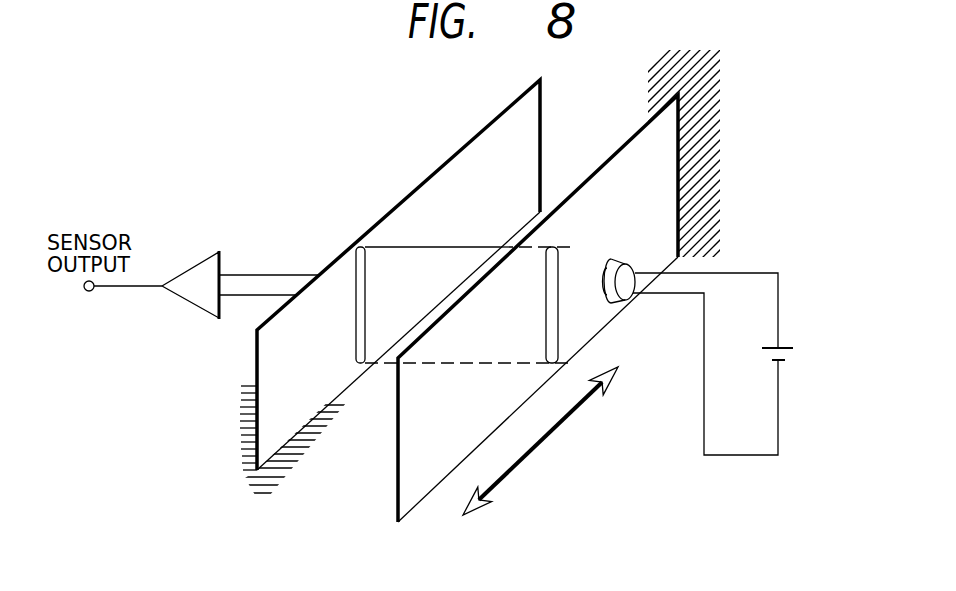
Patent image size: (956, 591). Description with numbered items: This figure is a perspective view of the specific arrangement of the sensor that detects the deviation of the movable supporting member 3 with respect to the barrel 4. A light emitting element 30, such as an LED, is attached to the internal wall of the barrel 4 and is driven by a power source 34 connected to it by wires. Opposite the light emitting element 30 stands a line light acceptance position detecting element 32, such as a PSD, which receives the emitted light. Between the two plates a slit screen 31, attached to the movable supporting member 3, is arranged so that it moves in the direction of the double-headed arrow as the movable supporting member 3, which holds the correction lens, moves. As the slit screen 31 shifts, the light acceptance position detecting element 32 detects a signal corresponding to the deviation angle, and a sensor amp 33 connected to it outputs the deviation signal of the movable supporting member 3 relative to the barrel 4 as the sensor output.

The movable supporting member 3 is at (707, 143).
The barrel 4 is at (245, 462).
The light emitting element 30 is at (618, 302).
The slit screen 31 is at (395, 493).
The line light acceptance position detecting element 32 is at (426, 181).
The sensor amp 33 is at (190, 268).
The power source 34 is at (787, 347).